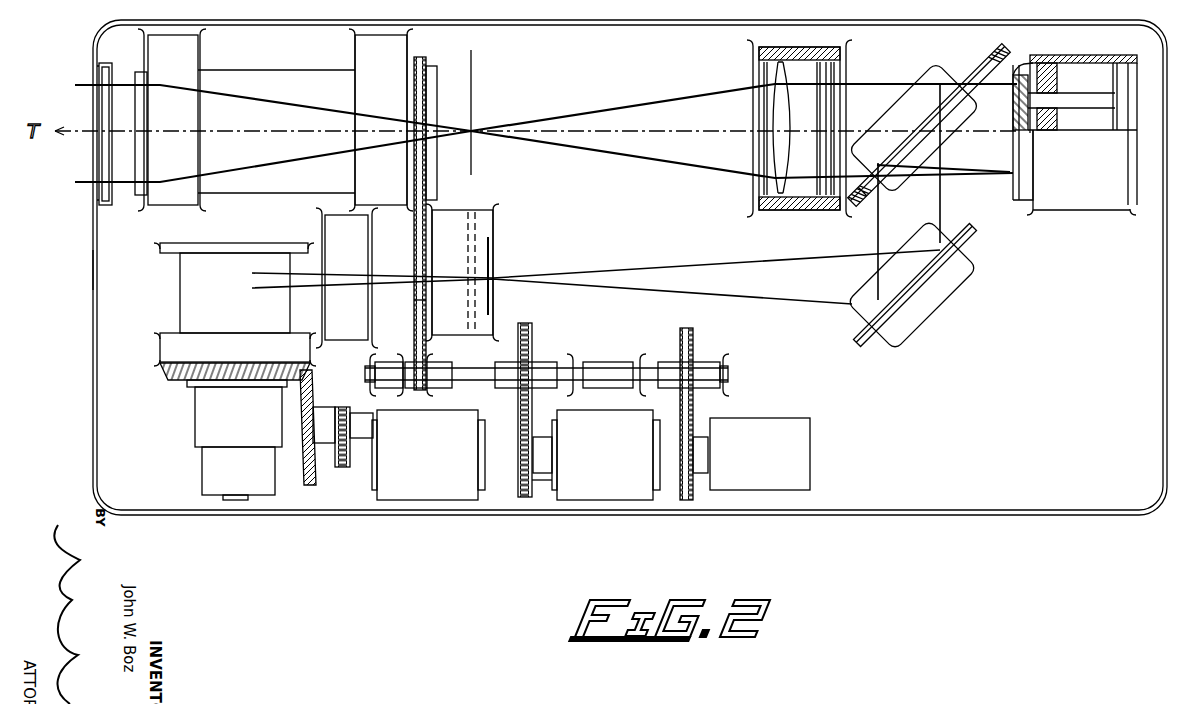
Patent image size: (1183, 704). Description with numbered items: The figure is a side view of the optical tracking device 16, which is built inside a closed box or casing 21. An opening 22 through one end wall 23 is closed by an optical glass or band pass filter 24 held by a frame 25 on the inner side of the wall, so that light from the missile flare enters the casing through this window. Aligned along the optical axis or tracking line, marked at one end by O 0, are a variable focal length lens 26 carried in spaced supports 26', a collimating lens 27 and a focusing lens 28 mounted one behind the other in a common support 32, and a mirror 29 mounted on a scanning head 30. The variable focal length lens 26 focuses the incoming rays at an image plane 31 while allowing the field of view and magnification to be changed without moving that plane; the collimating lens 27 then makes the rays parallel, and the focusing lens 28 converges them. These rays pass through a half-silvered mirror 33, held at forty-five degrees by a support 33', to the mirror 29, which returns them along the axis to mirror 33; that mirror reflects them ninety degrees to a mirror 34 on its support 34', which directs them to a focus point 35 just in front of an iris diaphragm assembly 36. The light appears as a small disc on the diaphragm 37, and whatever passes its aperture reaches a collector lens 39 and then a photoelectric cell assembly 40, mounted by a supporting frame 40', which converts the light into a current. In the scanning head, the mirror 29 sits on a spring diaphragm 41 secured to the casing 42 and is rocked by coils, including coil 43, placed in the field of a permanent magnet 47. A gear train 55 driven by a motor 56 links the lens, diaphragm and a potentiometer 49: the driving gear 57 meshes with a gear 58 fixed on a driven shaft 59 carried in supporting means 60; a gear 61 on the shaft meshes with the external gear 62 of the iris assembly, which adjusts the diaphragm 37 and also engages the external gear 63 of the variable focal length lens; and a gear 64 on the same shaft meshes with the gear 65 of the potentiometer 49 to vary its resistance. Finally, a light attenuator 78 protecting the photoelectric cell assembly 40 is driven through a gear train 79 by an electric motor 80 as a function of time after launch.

The tracking device 16 is at (206, 516).
The casing 21 is at (601, 22).
The opening 22 is at (97, 73).
The end wall 23 is at (93, 269).
The band pass filter 24 is at (103, 153).
The frame 25 is at (104, 205).
The variable focal length lens 26 is at (276, 119).
The spaced supports 26' is at (275, 120).
The collimating lens 27 is at (763, 81).
The focusing lens 28 is at (836, 79).
The mirror 29 is at (1013, 189).
The scanning head 30 is at (1030, 204).
The image plane 31 is at (476, 116).
The common support 32 is at (838, 51).
The half-silvered mirror 33 is at (929, 115).
The support 33' is at (914, 128).
The mirror 34 is at (931, 284).
The support 34' is at (918, 285).
The focus point 35 is at (497, 273).
The iris diaphragm assembly 36 is at (496, 235).
The diaphragm 37 is at (478, 223).
The collector lens 39 is at (334, 227).
The photoelectric cell assembly 40 is at (229, 416).
The supporting frame 40' is at (215, 259).
The spring diaphragm 41 is at (1020, 64).
The casing of the scanning head 42 is at (1126, 61).
The coil 43 is at (1081, 128).
The permanent magnet 47 is at (1057, 81).
The potentiometer 49 is at (796, 449).
The gear train 55 is at (517, 418).
The motor 56 is at (618, 475).
The driving gear 57 is at (518, 484).
The gear 58 is at (532, 342).
The driven shaft 59 is at (466, 382).
The supporting means 60 is at (377, 365).
The gear 61 is at (418, 391).
The external gear 62 is at (413, 313).
The external gear 63 is at (427, 171).
The gear 64 is at (693, 342).
The gear 65 is at (693, 429).
The light attenuator 78 is at (182, 301).
The gear train 79 is at (313, 400).
The electric motor 80 is at (388, 480).
The optical axis 0 is at (1001, 125).